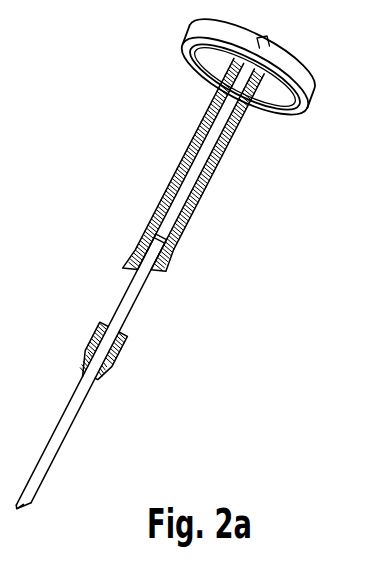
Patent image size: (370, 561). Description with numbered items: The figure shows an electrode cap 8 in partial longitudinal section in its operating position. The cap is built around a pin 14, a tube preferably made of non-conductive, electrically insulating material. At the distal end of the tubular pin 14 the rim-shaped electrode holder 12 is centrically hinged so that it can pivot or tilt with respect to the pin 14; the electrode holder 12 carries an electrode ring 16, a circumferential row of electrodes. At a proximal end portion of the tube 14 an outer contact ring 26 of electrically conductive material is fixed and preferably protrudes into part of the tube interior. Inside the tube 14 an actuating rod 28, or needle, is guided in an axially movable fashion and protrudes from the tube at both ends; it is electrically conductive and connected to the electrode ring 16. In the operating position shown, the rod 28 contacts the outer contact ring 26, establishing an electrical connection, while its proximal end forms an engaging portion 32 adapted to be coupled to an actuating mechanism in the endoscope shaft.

The electrode cap 8 is at (189, 283).
The electrode holder 12 is at (298, 77).
The pin 14 is at (172, 182).
The electrode ring 16 is at (293, 112).
The outer contact ring 26 is at (95, 336).
The actuating rod 28 is at (67, 430).
The engaging portion 32 is at (19, 510).